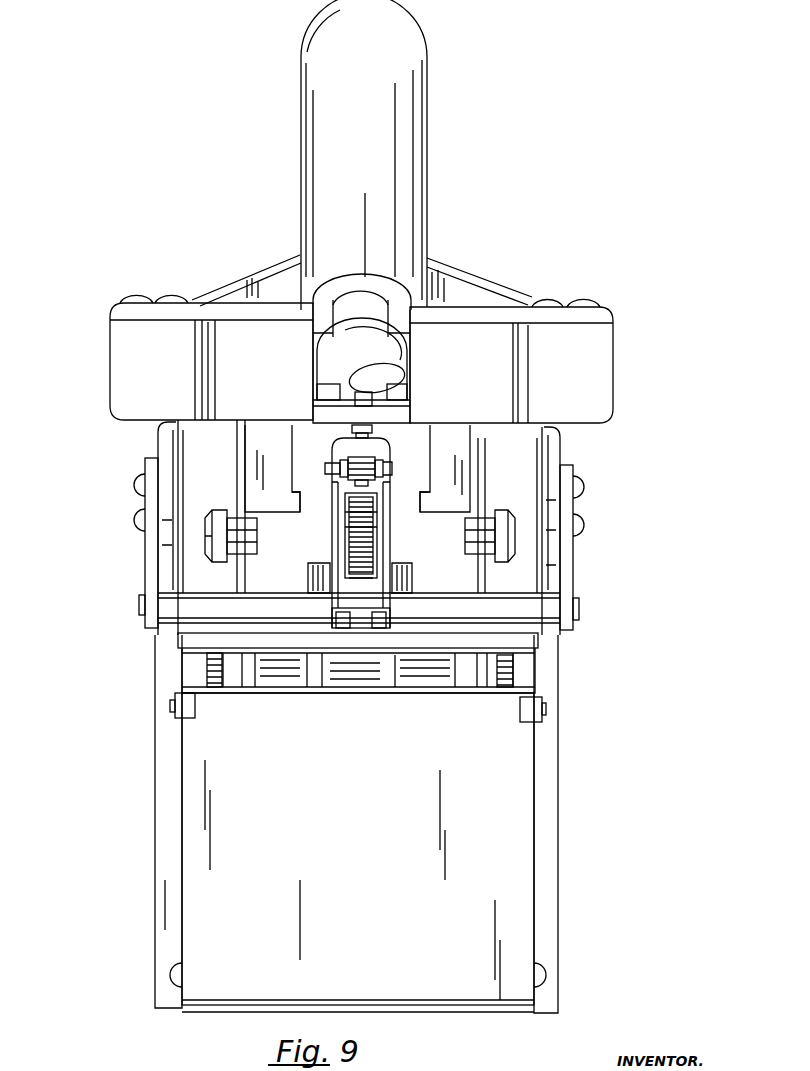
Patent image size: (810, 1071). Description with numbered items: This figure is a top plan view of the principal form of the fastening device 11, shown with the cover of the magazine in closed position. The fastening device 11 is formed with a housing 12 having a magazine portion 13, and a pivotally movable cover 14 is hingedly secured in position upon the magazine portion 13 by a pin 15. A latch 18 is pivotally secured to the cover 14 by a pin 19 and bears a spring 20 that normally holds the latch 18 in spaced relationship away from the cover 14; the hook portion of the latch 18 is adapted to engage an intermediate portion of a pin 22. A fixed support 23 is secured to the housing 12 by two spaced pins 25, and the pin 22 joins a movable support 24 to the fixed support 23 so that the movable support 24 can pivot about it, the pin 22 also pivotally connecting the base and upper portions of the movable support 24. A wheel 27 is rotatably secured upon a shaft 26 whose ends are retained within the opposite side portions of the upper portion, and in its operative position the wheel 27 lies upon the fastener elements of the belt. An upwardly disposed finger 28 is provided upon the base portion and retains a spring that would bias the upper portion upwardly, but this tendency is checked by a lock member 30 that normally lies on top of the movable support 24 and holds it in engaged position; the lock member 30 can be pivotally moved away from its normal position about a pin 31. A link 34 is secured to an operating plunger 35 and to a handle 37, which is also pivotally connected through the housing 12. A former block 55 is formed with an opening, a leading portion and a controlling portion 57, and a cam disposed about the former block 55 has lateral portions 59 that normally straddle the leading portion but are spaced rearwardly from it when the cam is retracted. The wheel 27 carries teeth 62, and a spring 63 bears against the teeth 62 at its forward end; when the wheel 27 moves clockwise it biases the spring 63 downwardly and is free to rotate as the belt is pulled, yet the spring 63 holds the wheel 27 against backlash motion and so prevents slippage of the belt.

The fastening device 11 is at (483, 235).
The housing 12 is at (600, 358).
The magazine portion 13 is at (555, 862).
The cover 14 is at (368, 872).
The pin 15 is at (173, 975).
The latch 18 is at (185, 643).
The pin 19 is at (170, 706).
The spring 20 is at (210, 688).
The pin 22 is at (139, 603).
The fixed support 23 is at (150, 566).
The movable support 24 is at (390, 586).
The pins 25 is at (135, 517).
The shaft 26 is at (390, 534).
The wheel 27 is at (377, 512).
The finger 28 is at (392, 486).
The lock member 30 is at (398, 466).
The pin 31 is at (400, 470).
The link 34 is at (368, 404).
The operating plunger 35 is at (402, 393).
The handle 37 is at (385, 357).
The former block 55 is at (312, 462).
The controlling portion 57 is at (282, 580).
The lateral portions 59 is at (293, 493).
The teeth 62 is at (360, 517).
The spring 63 is at (360, 578).